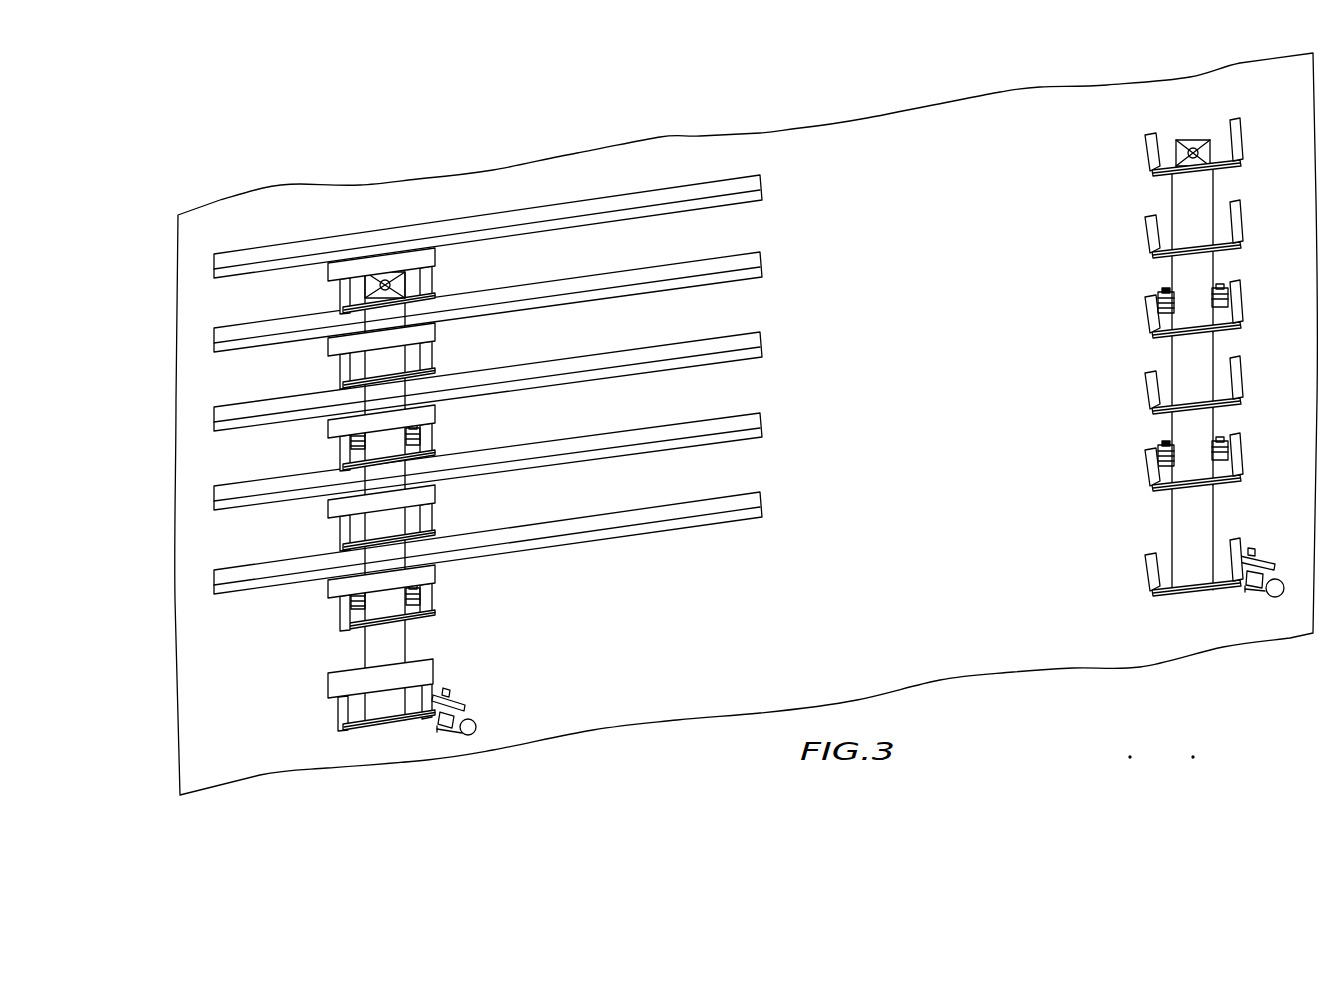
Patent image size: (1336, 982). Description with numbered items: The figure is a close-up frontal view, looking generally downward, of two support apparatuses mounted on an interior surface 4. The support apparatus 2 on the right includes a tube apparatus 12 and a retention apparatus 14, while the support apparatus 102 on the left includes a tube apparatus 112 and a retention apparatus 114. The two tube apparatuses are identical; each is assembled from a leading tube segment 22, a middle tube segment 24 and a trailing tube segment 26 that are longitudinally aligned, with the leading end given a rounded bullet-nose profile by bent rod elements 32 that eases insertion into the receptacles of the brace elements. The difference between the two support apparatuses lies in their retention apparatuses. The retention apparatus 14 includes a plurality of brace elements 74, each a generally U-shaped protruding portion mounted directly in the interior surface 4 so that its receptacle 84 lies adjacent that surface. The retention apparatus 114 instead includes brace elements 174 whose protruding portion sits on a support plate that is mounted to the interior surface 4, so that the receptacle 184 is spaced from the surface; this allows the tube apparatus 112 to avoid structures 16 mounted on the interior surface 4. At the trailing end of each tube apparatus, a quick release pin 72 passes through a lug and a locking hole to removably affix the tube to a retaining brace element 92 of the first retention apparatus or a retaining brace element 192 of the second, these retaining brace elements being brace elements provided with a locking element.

The support apparatus 2 is at (1128, 456).
The interior surface 4 is at (860, 140).
The tube apparatus 12 is at (1158, 360).
The retention apparatus 14 is at (1130, 404).
The structures 16 is at (763, 192).
The leading tube segment 22 is at (422, 337).
The middle tube segment 24 is at (422, 470).
The trailing tube segment 26 is at (424, 641).
The bent rod elements 32 is at (395, 280).
The quick release pin 72 is at (478, 722).
The brace elements 74 is at (1252, 130).
The receptacle 84 is at (1223, 136).
The retaining brace element 92 is at (1132, 576).
The support apparatus 102 is at (432, 622).
The tube apparatus 112 is at (352, 650).
The retention apparatus 114 is at (322, 610).
The brace elements 174 is at (320, 287).
The receptacle 184 is at (352, 292).
The retaining brace element 192 is at (455, 672).